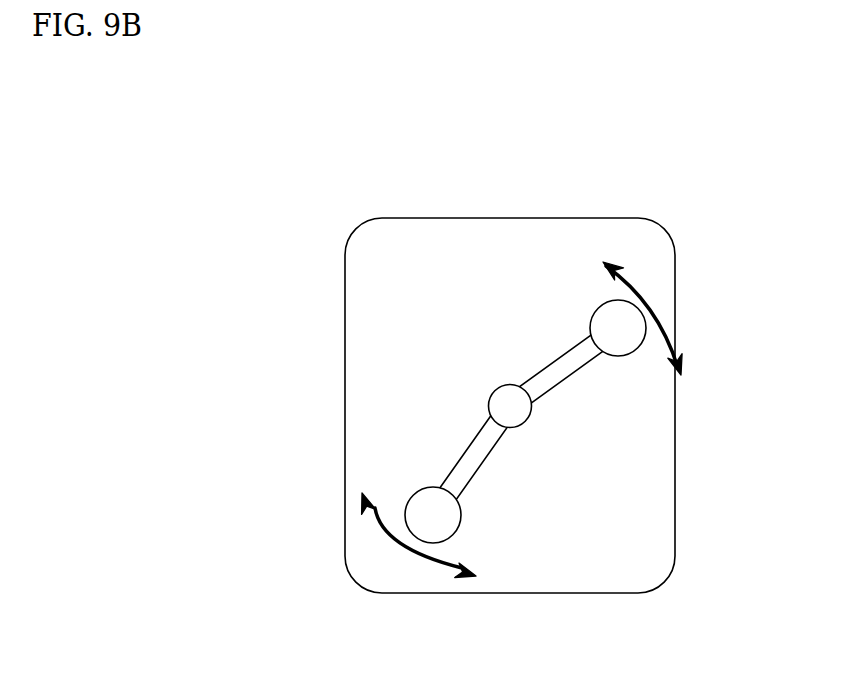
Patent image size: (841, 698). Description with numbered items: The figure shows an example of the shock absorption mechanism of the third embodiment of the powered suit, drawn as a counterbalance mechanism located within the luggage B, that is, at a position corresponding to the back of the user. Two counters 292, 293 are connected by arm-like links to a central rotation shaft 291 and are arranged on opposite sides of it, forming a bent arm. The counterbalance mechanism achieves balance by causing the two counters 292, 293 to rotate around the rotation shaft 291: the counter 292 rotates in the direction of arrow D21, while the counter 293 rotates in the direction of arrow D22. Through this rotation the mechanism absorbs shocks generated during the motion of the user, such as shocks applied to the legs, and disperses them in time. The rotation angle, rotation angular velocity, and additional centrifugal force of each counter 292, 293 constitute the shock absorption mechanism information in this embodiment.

The luggage B is at (510, 258).
The rotation shaft 291 is at (496, 397).
The counter 292 is at (623, 348).
The counter 293 is at (447, 520).
The arrow D21 is at (648, 302).
The arrow D22 is at (400, 543).